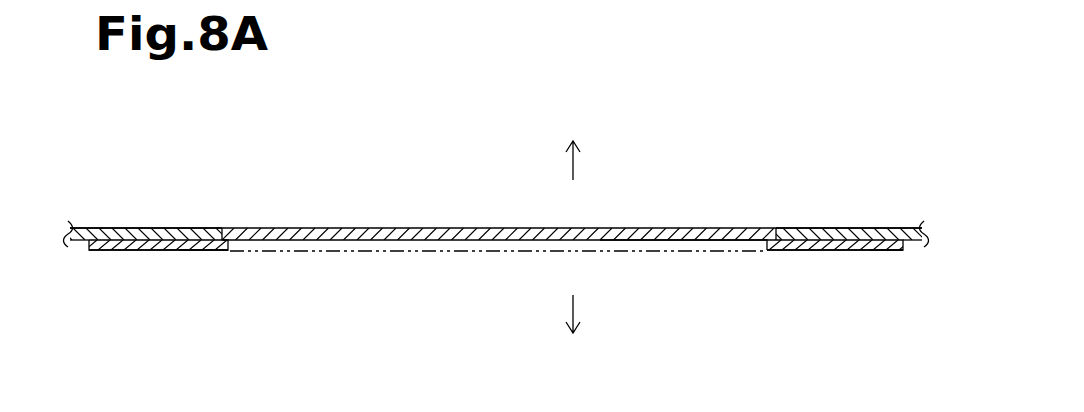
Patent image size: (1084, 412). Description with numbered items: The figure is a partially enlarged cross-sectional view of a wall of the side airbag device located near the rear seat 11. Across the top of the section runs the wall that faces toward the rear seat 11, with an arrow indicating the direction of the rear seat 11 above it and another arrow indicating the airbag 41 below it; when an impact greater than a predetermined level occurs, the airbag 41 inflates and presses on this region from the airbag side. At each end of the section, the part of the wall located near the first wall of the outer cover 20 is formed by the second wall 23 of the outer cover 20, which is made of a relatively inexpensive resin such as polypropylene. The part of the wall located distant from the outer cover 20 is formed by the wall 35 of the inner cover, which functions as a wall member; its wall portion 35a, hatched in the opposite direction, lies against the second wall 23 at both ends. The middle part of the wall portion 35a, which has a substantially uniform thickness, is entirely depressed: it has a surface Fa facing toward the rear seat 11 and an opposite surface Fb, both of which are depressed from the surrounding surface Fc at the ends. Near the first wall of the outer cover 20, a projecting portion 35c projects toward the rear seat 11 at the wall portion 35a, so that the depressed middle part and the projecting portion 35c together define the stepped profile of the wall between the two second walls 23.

The rear seat 11 is at (572, 146).
The airbag 41 is at (572, 331).
The second wall 23 is at (149, 228).
The outer cover 20 is at (496, 207).
The wall portion 35a is at (107, 251).
The wall 35 is at (490, 290).
The projecting portion 35c is at (688, 252).
The surface Fa is at (492, 228).
The opposite surface Fb is at (430, 252).
The surrounding surface Fc is at (190, 251).